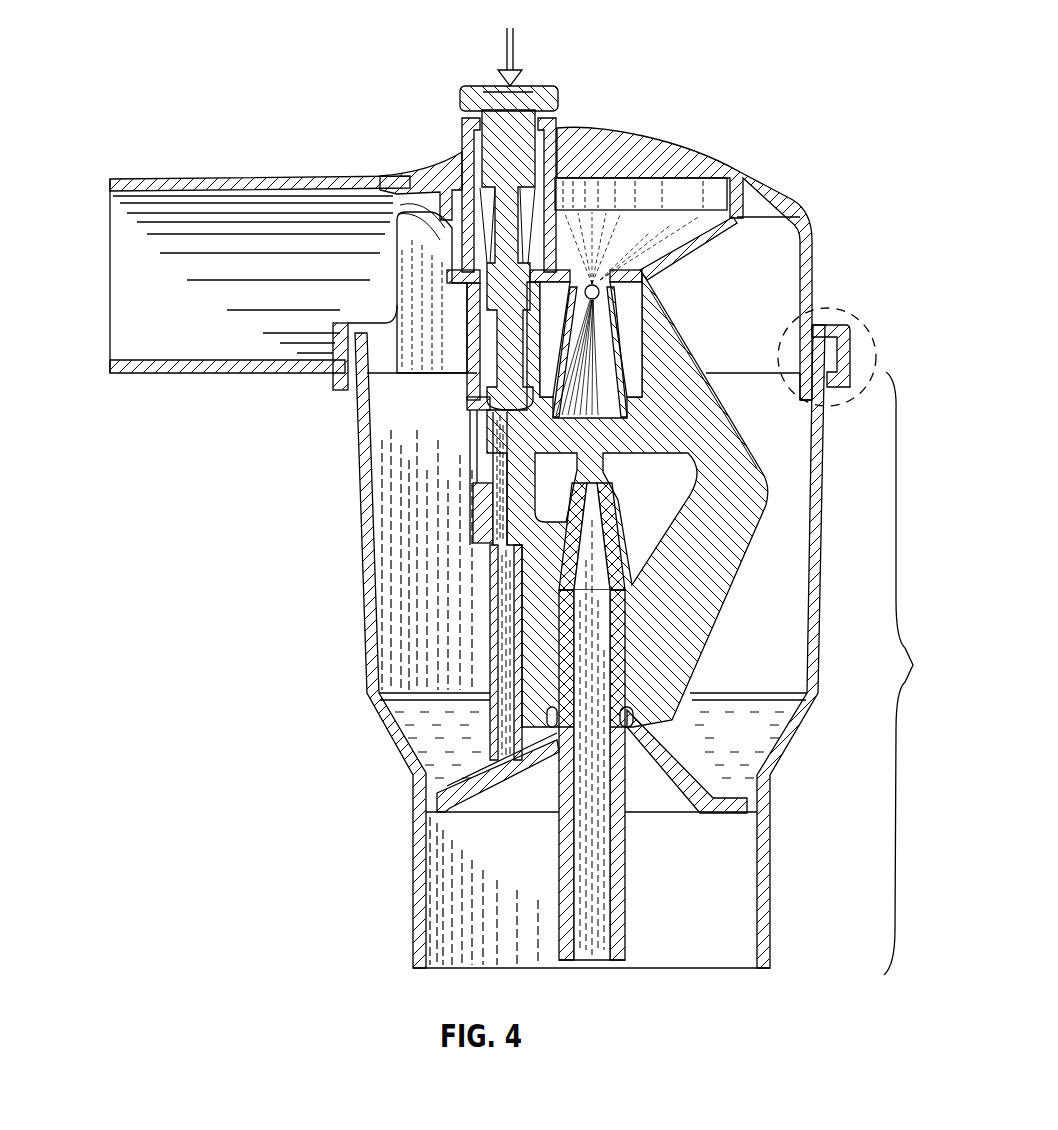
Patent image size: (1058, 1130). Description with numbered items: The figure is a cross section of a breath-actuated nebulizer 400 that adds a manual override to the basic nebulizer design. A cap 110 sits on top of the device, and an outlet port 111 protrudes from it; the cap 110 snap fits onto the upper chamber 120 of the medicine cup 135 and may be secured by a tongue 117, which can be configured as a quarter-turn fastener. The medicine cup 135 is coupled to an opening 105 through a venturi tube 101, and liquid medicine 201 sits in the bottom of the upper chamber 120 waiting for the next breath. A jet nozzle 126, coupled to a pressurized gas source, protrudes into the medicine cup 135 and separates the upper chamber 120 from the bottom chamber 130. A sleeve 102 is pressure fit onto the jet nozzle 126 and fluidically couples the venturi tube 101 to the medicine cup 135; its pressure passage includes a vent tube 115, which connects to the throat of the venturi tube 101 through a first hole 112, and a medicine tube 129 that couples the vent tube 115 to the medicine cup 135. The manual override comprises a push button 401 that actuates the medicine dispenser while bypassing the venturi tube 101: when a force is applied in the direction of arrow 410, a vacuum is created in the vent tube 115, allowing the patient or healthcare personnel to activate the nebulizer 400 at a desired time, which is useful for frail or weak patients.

The breath-actuated nebulizer 400 is at (124, 41).
The arrow 410 is at (516, 50).
The push button 401 is at (529, 168).
The opening 105 is at (632, 193).
The venturi tube 101 is at (613, 254).
The cap 110 is at (770, 292).
The outlet port 111 is at (213, 297).
The first hole 112 is at (600, 296).
The tongue 117 is at (866, 312).
The vent tube 115 is at (510, 428).
The sleeve 102 is at (757, 513).
The upper chamber 120 is at (449, 595).
The medicine tube 129 is at (515, 688).
The medicine 201 is at (762, 742).
The jet nozzle 126 is at (595, 678).
The medicine cup 135 is at (859, 650).
The bottom chamber 130 is at (507, 912).